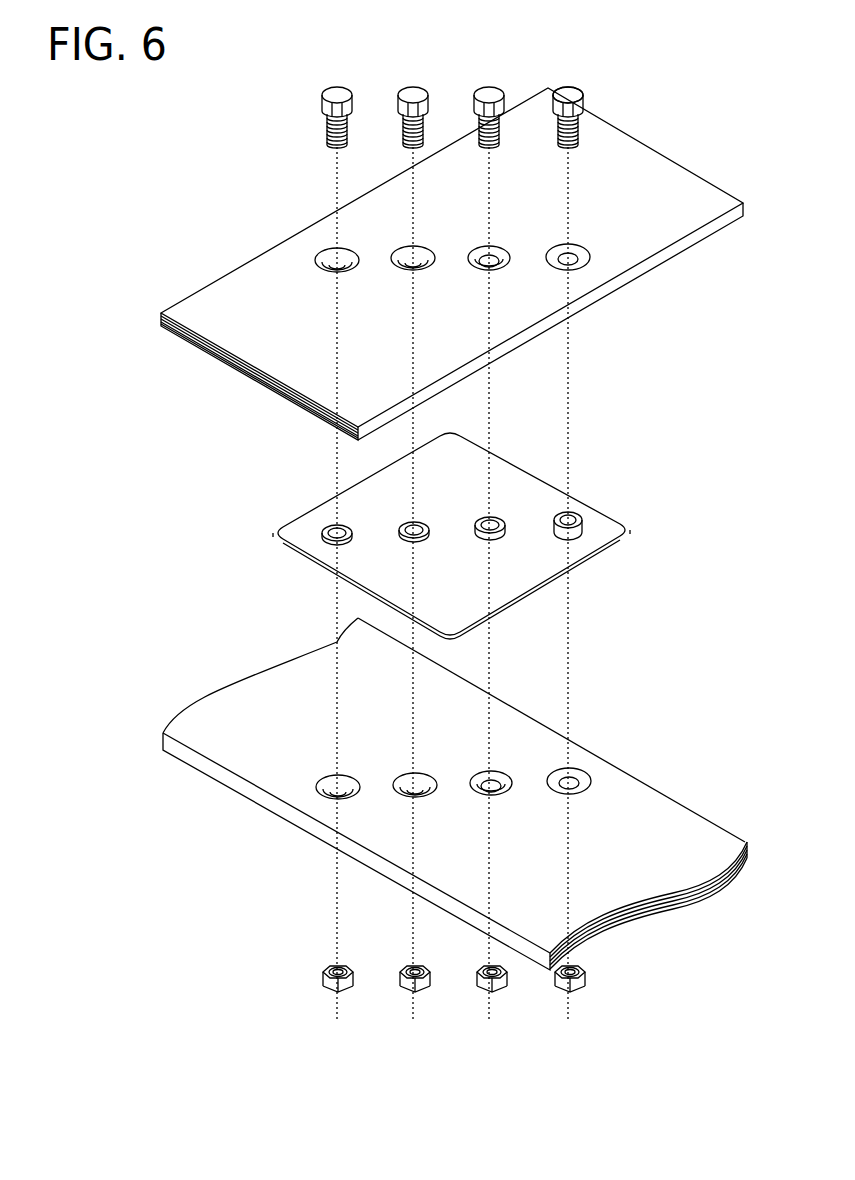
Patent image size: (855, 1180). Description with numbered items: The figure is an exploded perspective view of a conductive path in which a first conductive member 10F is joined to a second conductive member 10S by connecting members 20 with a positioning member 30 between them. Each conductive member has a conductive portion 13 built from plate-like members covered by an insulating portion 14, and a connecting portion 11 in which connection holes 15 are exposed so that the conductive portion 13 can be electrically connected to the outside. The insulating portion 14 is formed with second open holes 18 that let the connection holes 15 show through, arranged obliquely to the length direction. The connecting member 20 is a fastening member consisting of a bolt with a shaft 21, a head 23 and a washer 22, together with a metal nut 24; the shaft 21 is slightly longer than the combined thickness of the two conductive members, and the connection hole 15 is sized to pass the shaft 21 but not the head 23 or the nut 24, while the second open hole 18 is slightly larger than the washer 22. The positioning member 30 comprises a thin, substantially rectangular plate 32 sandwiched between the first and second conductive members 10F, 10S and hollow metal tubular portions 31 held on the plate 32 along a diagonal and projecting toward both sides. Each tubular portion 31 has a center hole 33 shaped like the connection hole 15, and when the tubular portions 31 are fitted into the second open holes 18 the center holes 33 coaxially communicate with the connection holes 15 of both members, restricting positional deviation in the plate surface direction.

The first conductive member 10F is at (452, 321).
The second conductive member 10S is at (688, 823).
The connecting portion 11 is at (638, 264).
The conductive portion 13 is at (290, 402).
The insulating portion 14 is at (255, 352).
The connection hole 15 is at (573, 248).
The second open hole 18 is at (335, 255).
The connecting member 20 is at (396, 85).
The shaft 21 is at (579, 138).
The washer 22 is at (584, 108).
The head 23 is at (569, 92).
The nut 24 is at (581, 991).
The positioning member 30 is at (491, 536).
The tubular portion 31 is at (576, 530).
The plate 32 is at (596, 550).
The center hole 33 is at (573, 515).